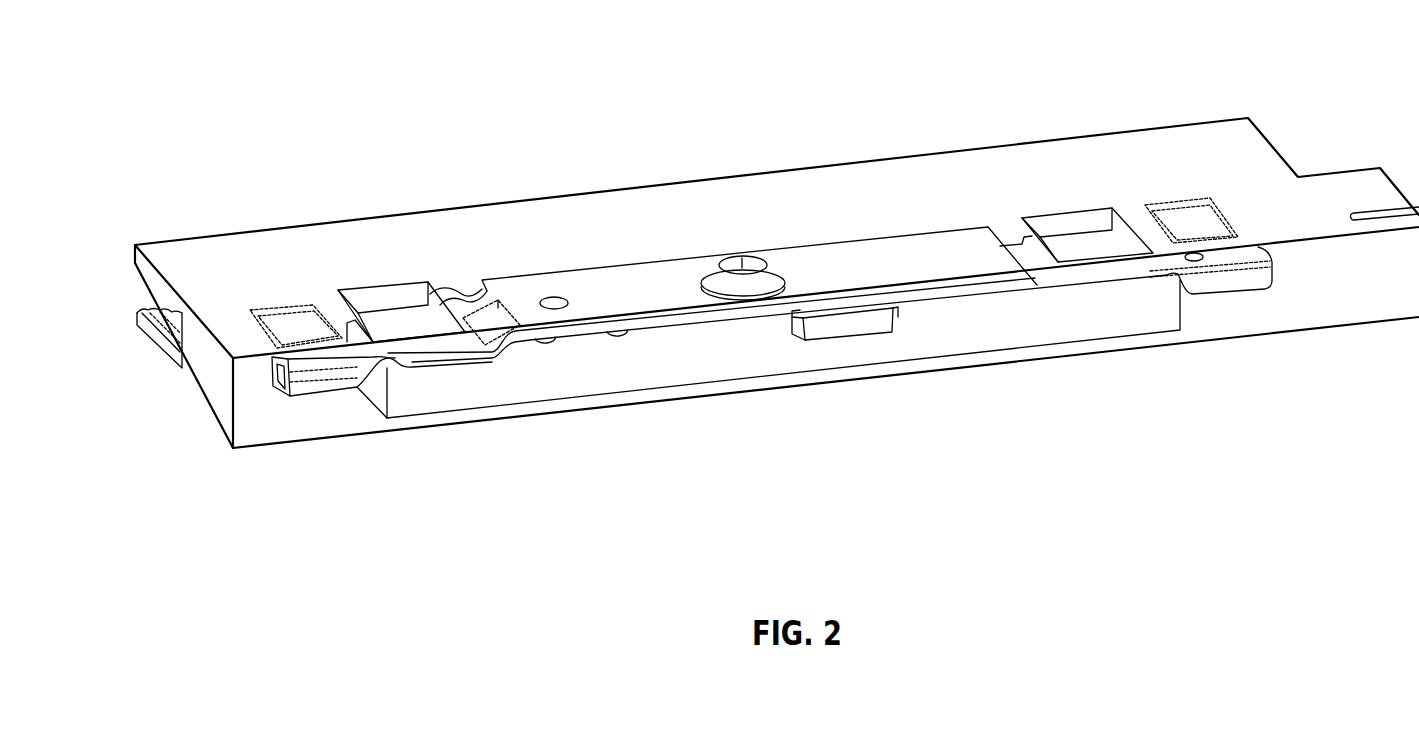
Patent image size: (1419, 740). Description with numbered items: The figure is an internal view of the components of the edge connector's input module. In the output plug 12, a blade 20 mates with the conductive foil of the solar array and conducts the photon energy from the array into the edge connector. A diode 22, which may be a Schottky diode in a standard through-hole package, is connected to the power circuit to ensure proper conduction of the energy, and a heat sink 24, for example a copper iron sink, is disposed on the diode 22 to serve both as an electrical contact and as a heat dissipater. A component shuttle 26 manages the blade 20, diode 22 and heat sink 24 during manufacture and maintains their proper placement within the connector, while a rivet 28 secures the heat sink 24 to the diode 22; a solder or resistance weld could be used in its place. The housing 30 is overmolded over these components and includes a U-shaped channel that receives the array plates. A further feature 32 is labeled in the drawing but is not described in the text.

The output plug 12 is at (224, 114).
The blade 20 is at (1235, 307).
The diode 22 is at (843, 317).
The heat sink 24 is at (611, 277).
The component shuttle 26 is at (962, 334).
The rivet 28 is at (742, 262).
The housing 30 is at (926, 172).
The connector port 32 is at (140, 320).